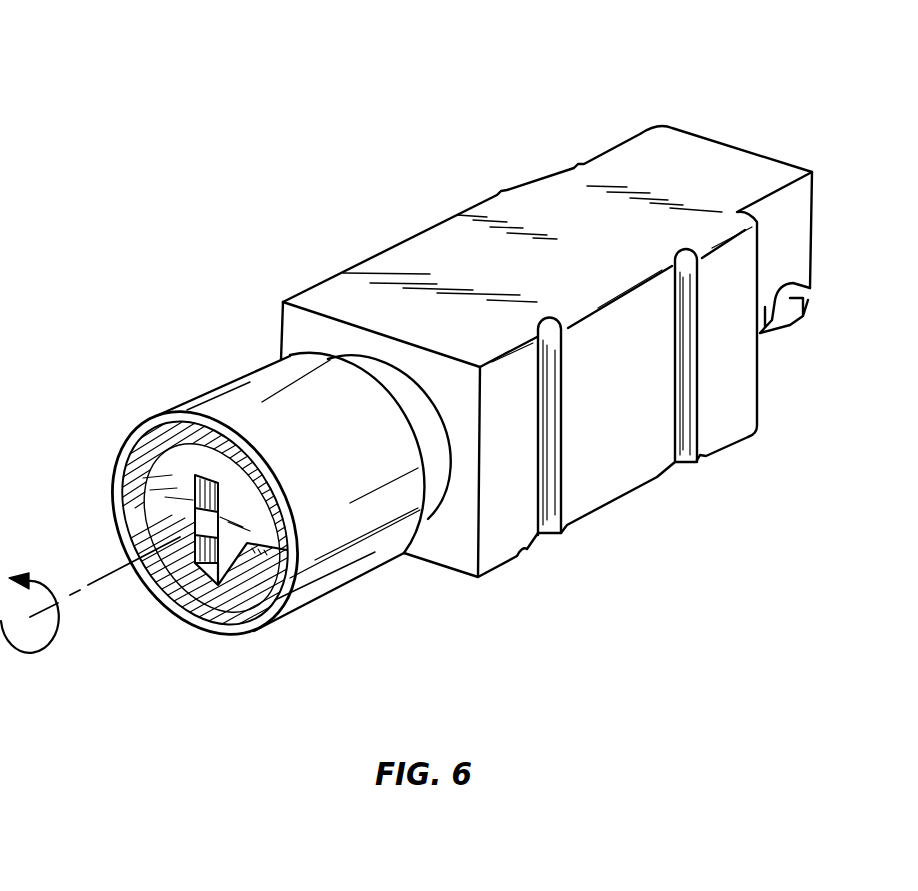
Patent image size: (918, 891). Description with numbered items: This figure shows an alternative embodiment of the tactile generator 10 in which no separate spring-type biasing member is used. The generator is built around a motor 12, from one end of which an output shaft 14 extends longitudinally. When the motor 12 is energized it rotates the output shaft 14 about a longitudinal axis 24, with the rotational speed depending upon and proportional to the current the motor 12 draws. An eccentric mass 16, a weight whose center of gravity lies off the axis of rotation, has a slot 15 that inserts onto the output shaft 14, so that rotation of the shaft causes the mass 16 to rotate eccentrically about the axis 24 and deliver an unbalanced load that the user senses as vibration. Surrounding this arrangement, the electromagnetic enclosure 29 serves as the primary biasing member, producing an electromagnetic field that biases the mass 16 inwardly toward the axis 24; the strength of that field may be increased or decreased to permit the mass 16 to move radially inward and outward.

The tactile generator 10 is at (763, 88).
The motor 12 is at (570, 210).
The output shaft 14 is at (197, 527).
The slot 15 is at (197, 558).
The eccentric mass 16 is at (172, 472).
The longitudinal axis 24 is at (103, 573).
The electromagnetic enclosure 29 is at (255, 397).